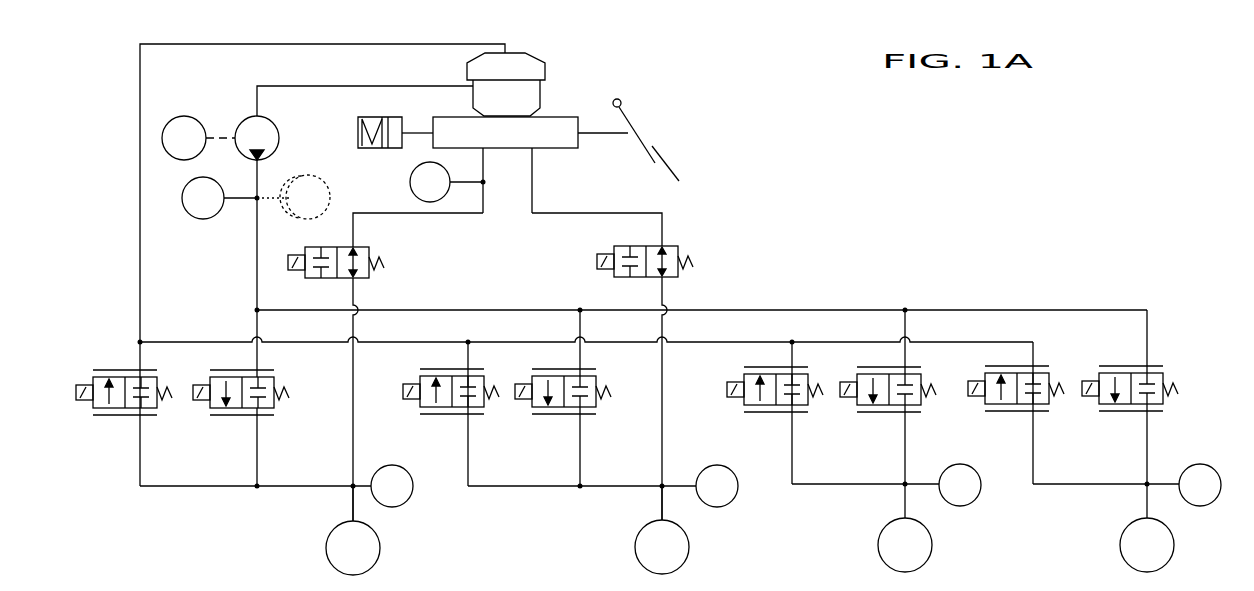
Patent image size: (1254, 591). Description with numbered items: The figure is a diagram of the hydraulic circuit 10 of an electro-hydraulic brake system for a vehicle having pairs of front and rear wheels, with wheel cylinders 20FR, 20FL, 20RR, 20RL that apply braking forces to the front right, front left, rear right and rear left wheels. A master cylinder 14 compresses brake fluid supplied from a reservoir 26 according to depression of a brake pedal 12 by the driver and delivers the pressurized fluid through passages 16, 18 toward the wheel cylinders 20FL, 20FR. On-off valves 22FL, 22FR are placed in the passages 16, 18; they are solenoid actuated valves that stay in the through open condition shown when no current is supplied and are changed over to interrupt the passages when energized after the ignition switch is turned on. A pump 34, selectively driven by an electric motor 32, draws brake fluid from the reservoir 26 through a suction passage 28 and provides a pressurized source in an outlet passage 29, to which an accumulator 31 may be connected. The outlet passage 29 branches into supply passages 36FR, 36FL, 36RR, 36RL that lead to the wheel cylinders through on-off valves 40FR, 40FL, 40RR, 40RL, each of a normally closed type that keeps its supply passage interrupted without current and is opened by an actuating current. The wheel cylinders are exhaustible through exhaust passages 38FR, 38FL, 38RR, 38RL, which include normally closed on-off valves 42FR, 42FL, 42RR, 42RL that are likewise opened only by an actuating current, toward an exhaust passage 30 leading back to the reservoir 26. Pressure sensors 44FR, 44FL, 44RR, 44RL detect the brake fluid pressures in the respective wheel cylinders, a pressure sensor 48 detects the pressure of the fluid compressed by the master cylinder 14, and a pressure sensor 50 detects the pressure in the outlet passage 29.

The hydraulic circuit 10 is at (804, 172).
The brake pedal 12 is at (677, 166).
The master cylinder 14 is at (513, 148).
The passage 16 is at (597, 213).
The passage 18 is at (458, 213).
The wheel cylinder 20FR is at (327, 548).
The wheel cylinder 20FL is at (635, 547).
The wheel cylinder 20RR is at (878, 545).
The wheel cylinder 20RL is at (1120, 545).
The on-off valve 22FR is at (363, 278).
The on-off valve 22FL is at (668, 240).
The reservoir 26 is at (547, 65).
The suction passage 28 is at (290, 86).
The outlet passage 29 is at (257, 242).
The exhaust passage 30 is at (140, 122).
The accumulator 31 is at (312, 222).
The electric motor 32 is at (181, 116).
The pump 34 is at (276, 148).
The supply passage 36FR is at (258, 349).
The supply passage 36FL is at (581, 349).
The supply passage 36RR is at (906, 349).
The supply passage 36RL is at (1148, 323).
The exhaust passage 38FR is at (188, 486).
The exhaust passage 38FL is at (510, 486).
The exhaust passage 38RR is at (823, 484).
The exhaust passage 38RL is at (1070, 484).
The on-off valve 40FR is at (237, 415).
The on-off valve 40FL is at (557, 414).
The on-off valve 40RR is at (882, 412).
The on-off valve 40RL is at (1153, 411).
The on-off valve 42FR is at (118, 415).
The on-off valve 42FL is at (445, 414).
The on-off valve 42RR is at (770, 412).
The on-off valve 42RL is at (1045, 411).
The pressure sensor 44FR is at (413, 492).
The pressure sensor 44FL is at (739, 490).
The pressure sensor 44RR is at (982, 490).
The pressure sensor 44RL is at (1210, 505).
The pressure sensor 48 is at (410, 181).
The pressure sensor 50 is at (192, 219).